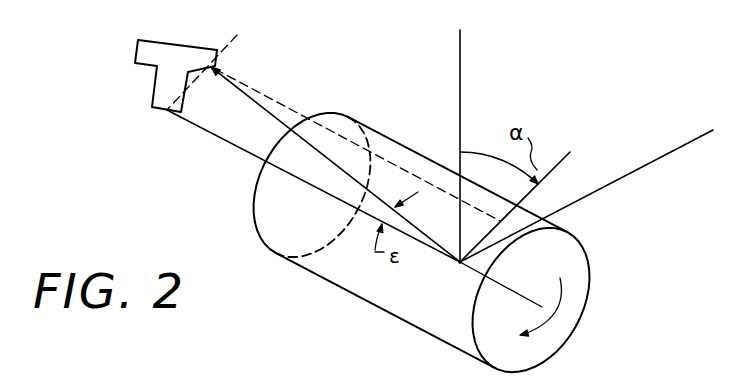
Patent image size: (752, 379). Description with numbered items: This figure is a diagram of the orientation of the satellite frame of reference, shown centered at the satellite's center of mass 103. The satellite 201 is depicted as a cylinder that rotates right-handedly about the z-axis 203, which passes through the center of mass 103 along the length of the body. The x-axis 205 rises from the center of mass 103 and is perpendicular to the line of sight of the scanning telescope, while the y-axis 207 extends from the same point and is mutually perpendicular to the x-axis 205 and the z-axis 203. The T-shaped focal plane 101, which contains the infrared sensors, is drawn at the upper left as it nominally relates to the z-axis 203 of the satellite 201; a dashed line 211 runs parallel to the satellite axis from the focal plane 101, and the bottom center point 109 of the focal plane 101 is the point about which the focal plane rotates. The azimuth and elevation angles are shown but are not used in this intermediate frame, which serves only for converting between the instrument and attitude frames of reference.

The focal plane 101 is at (178, 43).
The satellite's center of mass 103 is at (458, 266).
The bottom center point 109 is at (166, 111).
The satellite 201 is at (332, 285).
The z-axis 203 is at (212, 134).
The x-axis 205 is at (461, 70).
The y-axis 207 is at (643, 168).
The dashed line parallel to cylinder axis 211 is at (285, 106).